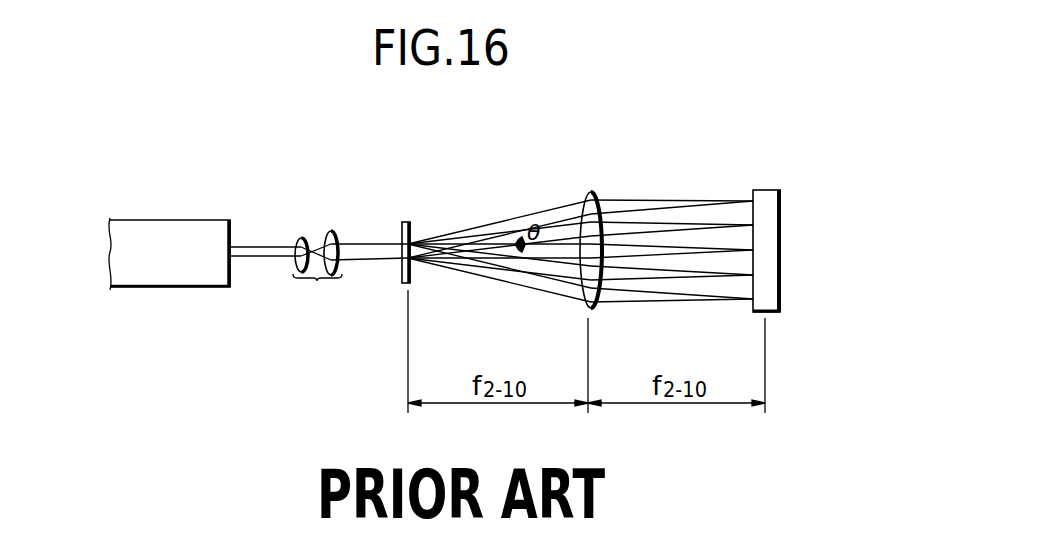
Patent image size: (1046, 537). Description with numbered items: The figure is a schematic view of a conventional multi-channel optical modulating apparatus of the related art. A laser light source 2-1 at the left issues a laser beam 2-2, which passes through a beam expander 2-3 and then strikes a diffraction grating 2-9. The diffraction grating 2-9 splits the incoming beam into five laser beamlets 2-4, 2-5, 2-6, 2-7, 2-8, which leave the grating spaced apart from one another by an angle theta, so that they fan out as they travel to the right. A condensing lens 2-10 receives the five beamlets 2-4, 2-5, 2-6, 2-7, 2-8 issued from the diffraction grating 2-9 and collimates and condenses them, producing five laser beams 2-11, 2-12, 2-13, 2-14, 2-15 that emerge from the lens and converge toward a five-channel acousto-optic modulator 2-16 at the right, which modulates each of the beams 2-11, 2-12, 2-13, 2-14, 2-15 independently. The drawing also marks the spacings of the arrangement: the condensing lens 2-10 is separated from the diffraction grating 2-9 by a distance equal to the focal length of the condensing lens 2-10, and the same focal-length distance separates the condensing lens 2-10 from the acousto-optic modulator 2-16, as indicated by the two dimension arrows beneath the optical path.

The laser light source 2-1 is at (178, 222).
The laser beam 2-2 is at (263, 247).
The beam expander 2-3 is at (317, 272).
The laser beamlet 2-4 is at (458, 232).
The laser beamlet 2-5 is at (498, 238).
The laser beamlet 2-6 is at (485, 255).
The laser beamlet 2-7 is at (508, 268).
The laser beamlet 2-8 is at (553, 295).
The diffraction grating 2-9 is at (405, 284).
The condensing lens 2-10 is at (591, 193).
The laser beam emerging from the condensing lens 2-11 is at (652, 203).
The laser beam emerging from the condensing lens 2-12 is at (713, 227).
The laser beam emerging from the condensing lens 2-13 is at (613, 252).
The laser beam emerging from the condensing lens 2-14 is at (667, 275).
The laser beam emerging from the condensing lens 2-15 is at (698, 300).
The 5-channel acousto-optic modulator 2-16 is at (767, 190).